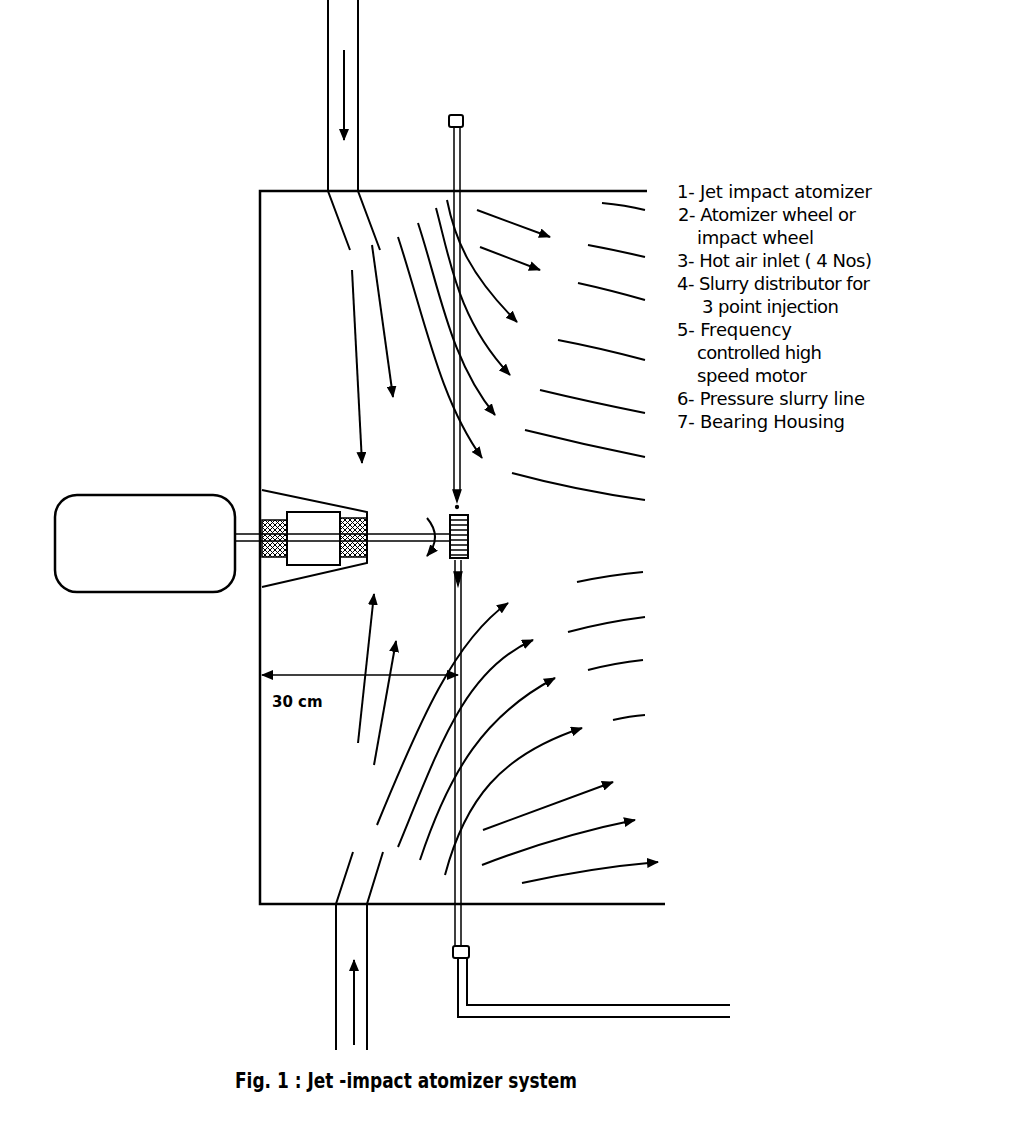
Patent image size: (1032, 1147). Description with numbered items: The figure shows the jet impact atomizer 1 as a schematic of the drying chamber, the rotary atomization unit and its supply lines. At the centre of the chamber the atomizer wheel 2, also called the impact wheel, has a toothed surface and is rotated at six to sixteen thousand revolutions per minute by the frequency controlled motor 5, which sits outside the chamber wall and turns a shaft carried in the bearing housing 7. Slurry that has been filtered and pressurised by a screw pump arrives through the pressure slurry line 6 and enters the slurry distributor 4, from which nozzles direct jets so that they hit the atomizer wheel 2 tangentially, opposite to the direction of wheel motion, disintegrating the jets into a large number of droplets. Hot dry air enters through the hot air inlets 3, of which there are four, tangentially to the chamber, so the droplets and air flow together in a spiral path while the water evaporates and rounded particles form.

The jet impact atomizer 1 is at (400, 505).
The atomizer wheel 2 is at (464, 531).
The hot air inlet 3 is at (337, 215).
The slurry distributor 4 is at (475, 521).
The frequency controlled motor 5 is at (203, 577).
The pressure slurry line 6 is at (609, 993).
The bearing housing 7 is at (314, 561).